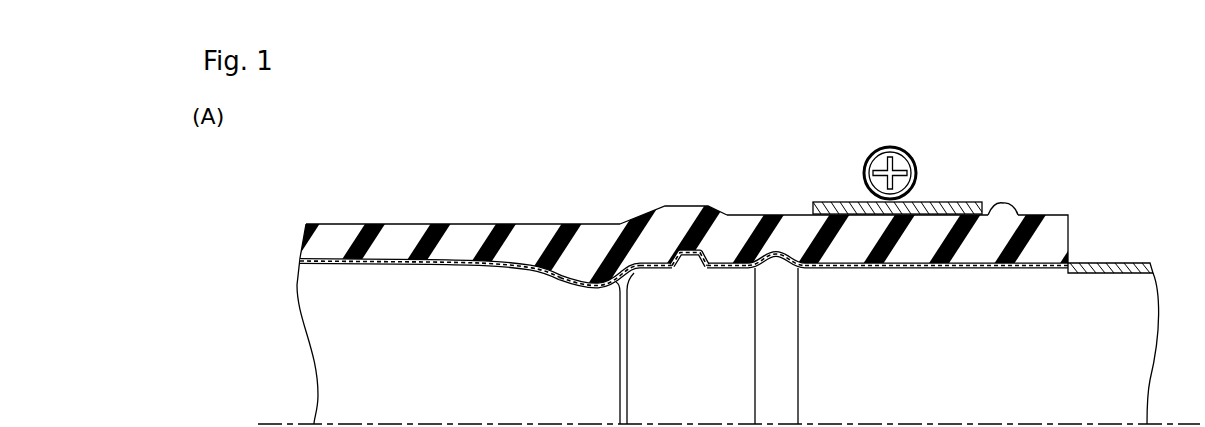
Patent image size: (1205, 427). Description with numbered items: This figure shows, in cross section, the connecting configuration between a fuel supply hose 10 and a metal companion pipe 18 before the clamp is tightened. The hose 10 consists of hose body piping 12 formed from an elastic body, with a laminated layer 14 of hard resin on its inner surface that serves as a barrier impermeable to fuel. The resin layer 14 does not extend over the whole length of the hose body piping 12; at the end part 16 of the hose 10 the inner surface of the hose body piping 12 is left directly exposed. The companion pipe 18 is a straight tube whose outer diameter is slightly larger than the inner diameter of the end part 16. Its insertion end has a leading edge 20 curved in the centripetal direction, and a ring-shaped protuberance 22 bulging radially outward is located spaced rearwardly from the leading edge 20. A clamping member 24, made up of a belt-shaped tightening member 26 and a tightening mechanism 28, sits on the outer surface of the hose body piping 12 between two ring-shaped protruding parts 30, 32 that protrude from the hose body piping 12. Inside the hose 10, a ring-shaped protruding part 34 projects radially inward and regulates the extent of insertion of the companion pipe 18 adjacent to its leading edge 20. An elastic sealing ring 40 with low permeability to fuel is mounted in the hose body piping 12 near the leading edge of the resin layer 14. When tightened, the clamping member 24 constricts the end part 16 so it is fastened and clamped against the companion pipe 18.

The fuel supply hose 10 is at (643, 157).
The hose body piping 12 is at (468, 222).
The laminated layer 14 is at (430, 264).
The end part 16 is at (940, 227).
The companion pipe 18 is at (1116, 259).
The leading edge 20 is at (636, 281).
The protuberance 22 is at (783, 250).
The clamping member 24 is at (897, 119).
The tightening member 26 is at (927, 200).
The tightening mechanism 28 is at (878, 152).
The ring-shaped protruding part 30 is at (1005, 203).
The ring-shaped protruding part 32 is at (686, 210).
The ring-shaped protruding part 34 is at (607, 288).
The elastic sealing ring 40 is at (691, 276).